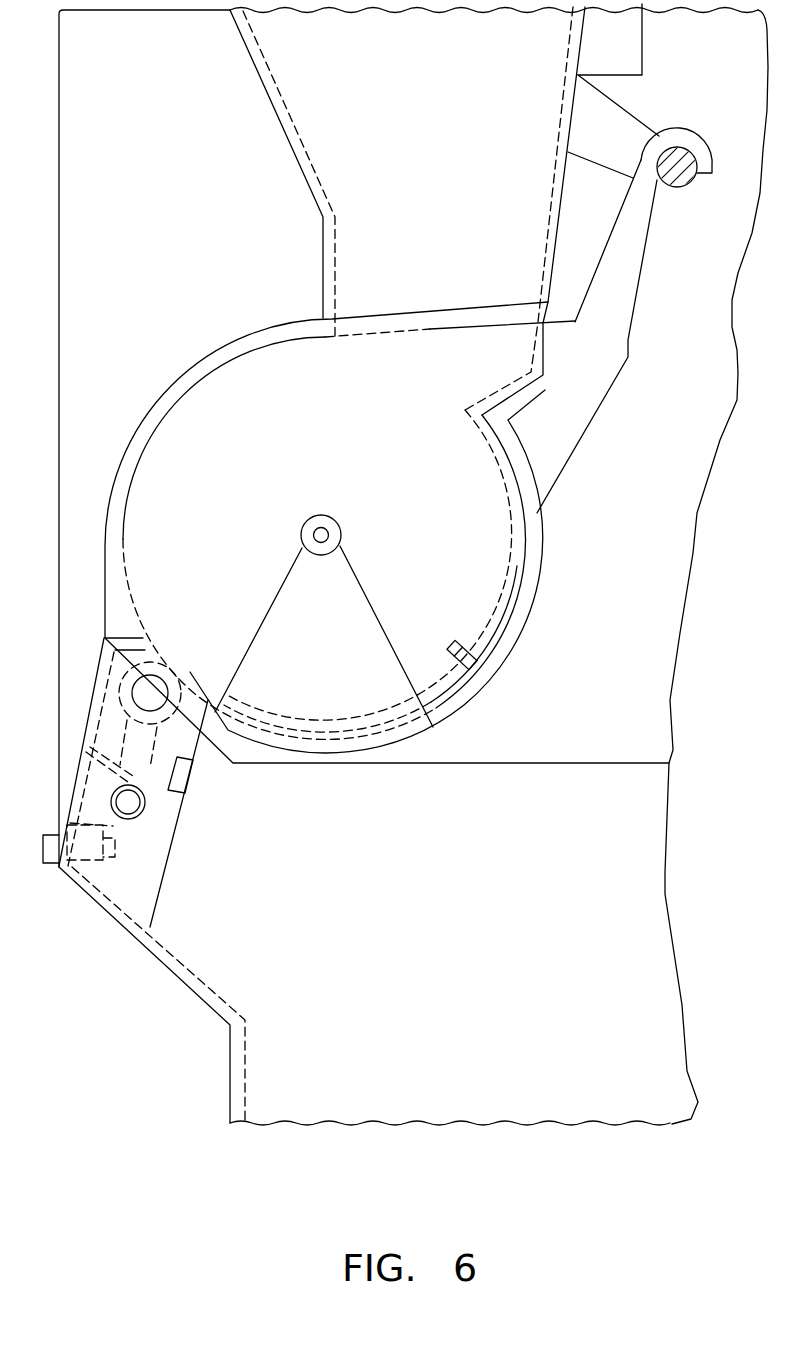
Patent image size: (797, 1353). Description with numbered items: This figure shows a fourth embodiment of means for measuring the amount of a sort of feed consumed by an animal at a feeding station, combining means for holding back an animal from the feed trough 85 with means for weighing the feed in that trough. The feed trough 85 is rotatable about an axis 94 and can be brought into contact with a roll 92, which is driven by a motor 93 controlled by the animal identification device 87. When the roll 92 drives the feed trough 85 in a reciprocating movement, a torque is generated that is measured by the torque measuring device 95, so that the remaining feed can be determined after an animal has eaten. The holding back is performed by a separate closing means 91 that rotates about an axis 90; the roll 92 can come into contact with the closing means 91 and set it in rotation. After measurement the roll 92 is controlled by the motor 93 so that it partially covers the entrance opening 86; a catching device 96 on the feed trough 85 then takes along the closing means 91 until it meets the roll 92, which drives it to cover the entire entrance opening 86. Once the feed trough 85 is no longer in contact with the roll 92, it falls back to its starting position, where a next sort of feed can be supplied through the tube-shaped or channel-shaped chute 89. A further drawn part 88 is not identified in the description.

The feed trough 85 is at (504, 642).
The entrance opening 86 is at (203, 367).
The animal identification device 87 is at (120, 885).
The bracket 88 is at (615, 40).
The tube-shaped chute or channel-shaped chute 89 is at (317, 122).
The axis 90 is at (340, 536).
The closing means 91 is at (345, 672).
The roll 92 is at (176, 694).
The motor 93 is at (137, 813).
The axis 94 is at (680, 178).
The torque measuring device 95 is at (182, 775).
The catching device 96 is at (455, 648).